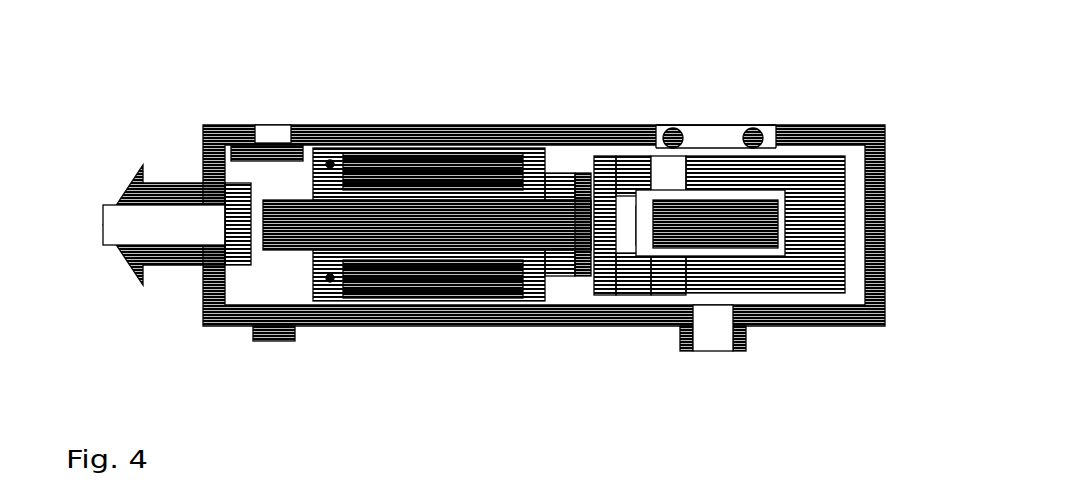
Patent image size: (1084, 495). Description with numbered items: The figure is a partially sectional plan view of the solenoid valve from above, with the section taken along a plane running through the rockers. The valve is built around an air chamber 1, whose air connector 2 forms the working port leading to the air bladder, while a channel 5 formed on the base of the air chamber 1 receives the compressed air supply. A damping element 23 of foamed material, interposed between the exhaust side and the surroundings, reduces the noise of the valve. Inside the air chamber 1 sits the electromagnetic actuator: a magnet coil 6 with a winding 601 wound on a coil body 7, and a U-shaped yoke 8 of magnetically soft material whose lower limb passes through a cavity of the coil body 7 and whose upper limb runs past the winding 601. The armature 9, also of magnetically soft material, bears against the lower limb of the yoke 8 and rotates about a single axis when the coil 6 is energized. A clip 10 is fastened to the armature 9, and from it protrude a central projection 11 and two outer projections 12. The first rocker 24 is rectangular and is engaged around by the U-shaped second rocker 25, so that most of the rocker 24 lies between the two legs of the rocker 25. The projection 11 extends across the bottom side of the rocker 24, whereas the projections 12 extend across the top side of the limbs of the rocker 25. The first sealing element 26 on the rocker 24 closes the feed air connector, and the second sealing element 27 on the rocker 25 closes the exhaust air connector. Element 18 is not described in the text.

The air chamber 1 is at (262, 163).
The air connector 2 is at (95, 240).
The channel 5 is at (706, 315).
The magnet coil 6 is at (490, 140).
The coil body 7 is at (320, 290).
The U-shaped yoke 8 is at (517, 200).
The armature 9 is at (577, 262).
The clip 10 is at (598, 275).
The projection 11 is at (623, 208).
The projections 12 is at (623, 153).
The bushing 18 is at (233, 237).
The damping element 23 is at (850, 275).
The first rocker 24 is at (715, 198).
The second rocker 25 is at (810, 153).
The first sealing element 26 is at (702, 202).
The second sealing element 27 is at (820, 218).
The winding 601 is at (393, 148).